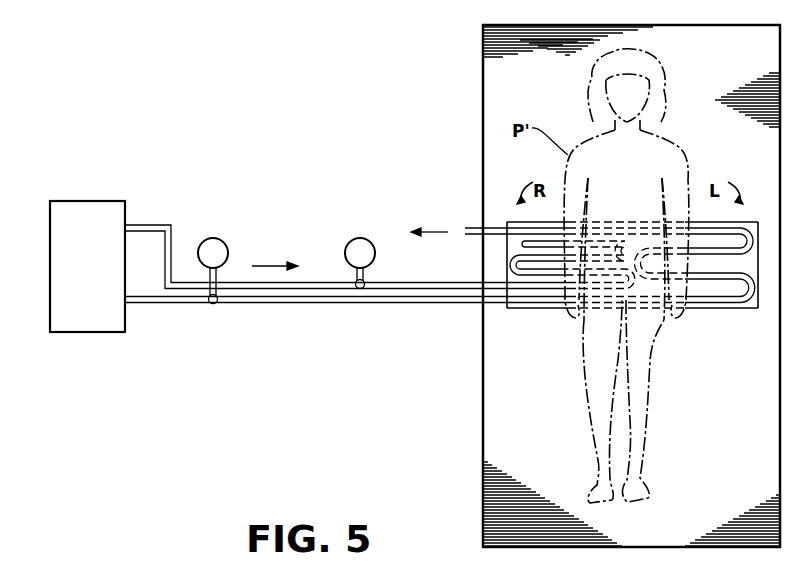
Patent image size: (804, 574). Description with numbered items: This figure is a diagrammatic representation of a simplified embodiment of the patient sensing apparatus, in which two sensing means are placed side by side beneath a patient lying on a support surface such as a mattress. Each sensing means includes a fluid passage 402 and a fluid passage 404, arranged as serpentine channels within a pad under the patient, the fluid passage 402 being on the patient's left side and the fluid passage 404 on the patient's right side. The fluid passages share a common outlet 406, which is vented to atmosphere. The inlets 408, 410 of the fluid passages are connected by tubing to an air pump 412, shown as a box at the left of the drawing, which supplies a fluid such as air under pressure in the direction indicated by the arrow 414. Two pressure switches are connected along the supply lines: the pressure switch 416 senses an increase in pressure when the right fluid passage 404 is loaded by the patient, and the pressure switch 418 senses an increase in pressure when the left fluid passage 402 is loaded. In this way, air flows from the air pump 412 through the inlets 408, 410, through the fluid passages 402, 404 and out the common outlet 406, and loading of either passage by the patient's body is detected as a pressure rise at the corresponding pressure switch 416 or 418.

The fluid passage 402 is at (705, 309).
The fluid passage 404 is at (507, 262).
The common outlet 406 is at (440, 228).
The inlet 408 is at (306, 292).
The inlet 410 is at (436, 304).
The air pump 412 is at (88, 200).
The arrow 414 is at (272, 262).
The pressure switch 416 is at (362, 238).
The pressure switch 418 is at (215, 238).